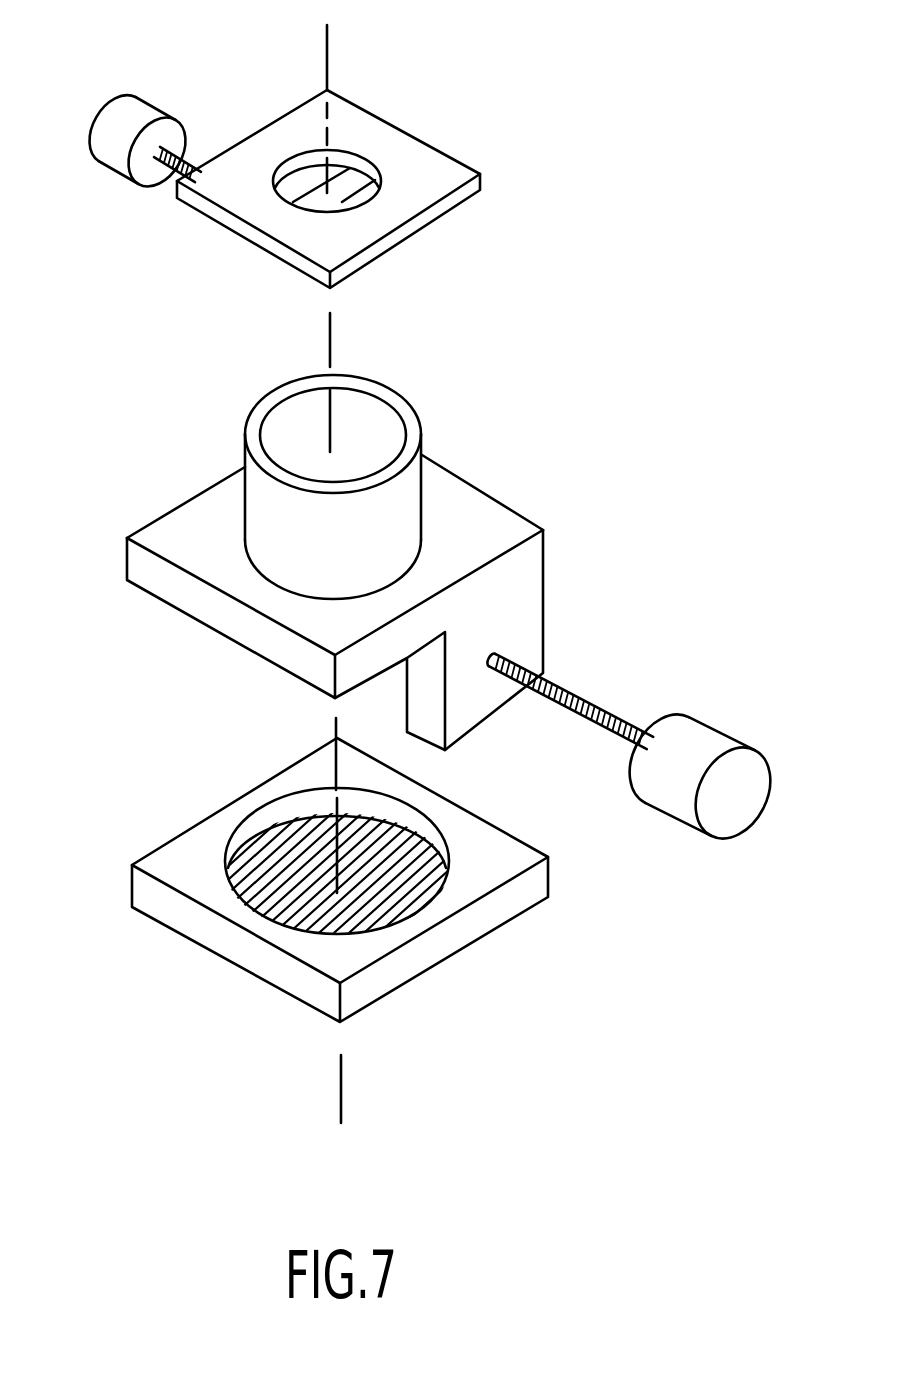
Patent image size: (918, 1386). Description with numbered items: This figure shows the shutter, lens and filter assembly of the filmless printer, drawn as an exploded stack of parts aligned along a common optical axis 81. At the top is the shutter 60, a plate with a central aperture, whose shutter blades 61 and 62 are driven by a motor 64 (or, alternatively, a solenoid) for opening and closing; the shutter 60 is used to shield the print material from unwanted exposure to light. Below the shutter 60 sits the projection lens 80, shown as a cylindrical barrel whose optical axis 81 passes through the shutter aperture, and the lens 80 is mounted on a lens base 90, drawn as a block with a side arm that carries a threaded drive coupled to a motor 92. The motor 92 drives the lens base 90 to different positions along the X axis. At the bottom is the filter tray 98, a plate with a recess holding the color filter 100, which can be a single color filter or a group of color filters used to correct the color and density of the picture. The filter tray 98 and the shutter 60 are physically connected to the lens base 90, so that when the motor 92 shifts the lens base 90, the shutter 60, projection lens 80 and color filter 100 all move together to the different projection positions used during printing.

The shutter 60 is at (427, 158).
The shutter blade 61 is at (290, 190).
The shutter blade 62 is at (363, 195).
The motor 64 is at (113, 108).
The projection lens 80 is at (257, 498).
The optical axis 81 is at (327, 43).
The lens base 90 is at (462, 505).
The motor 92 is at (703, 735).
The filter tray 98 is at (203, 888).
The color filter 100 is at (395, 900).